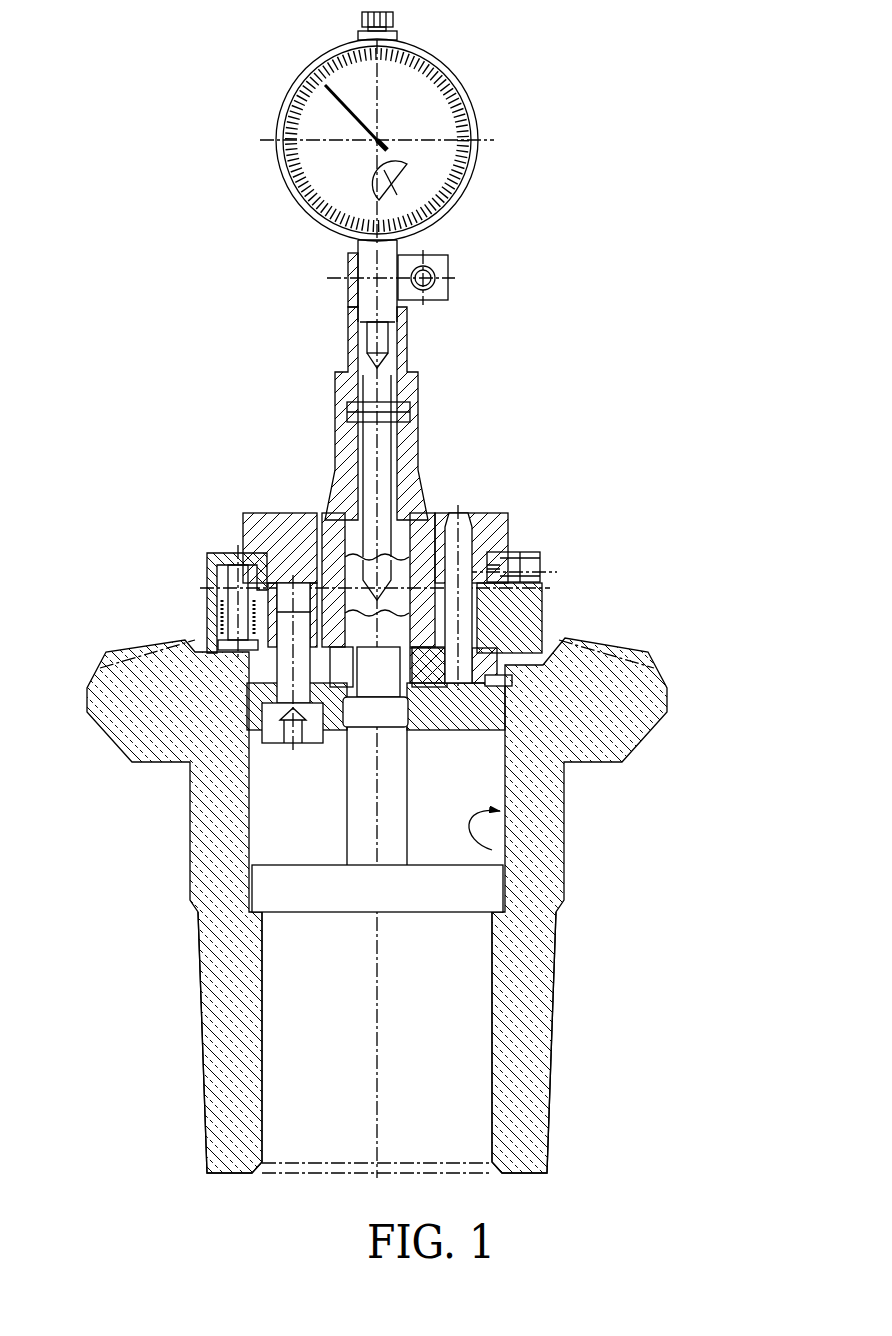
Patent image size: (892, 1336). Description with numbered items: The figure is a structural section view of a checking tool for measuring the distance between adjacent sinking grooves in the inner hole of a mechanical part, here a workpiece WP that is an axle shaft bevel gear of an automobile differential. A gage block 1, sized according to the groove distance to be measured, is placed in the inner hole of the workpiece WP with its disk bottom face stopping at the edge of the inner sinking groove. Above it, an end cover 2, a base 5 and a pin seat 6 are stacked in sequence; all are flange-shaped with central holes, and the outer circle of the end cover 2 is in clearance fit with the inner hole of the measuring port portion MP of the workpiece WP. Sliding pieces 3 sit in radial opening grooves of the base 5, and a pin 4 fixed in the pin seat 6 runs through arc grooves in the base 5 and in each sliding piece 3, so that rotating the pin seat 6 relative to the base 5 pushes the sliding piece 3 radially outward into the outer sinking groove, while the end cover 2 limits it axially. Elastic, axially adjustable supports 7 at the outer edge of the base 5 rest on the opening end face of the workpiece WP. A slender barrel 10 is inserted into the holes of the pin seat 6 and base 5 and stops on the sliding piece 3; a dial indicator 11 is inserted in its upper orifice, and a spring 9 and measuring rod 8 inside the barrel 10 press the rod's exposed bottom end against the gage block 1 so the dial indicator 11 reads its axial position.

The gage block 1 is at (492, 873).
The end cover 2 is at (538, 765).
The sliding piece 3 is at (485, 720).
The pin 4 is at (493, 680).
The base 5 is at (533, 615).
The pin seat 6 is at (515, 540).
The support 7 is at (238, 612).
The measuring rod 8 is at (385, 480).
The spring 9 is at (405, 420).
The barrel 10 is at (415, 380).
The dial indicator 11 is at (455, 170).
The measuring port portion MP is at (505, 840).
The workpiece WP is at (235, 977).